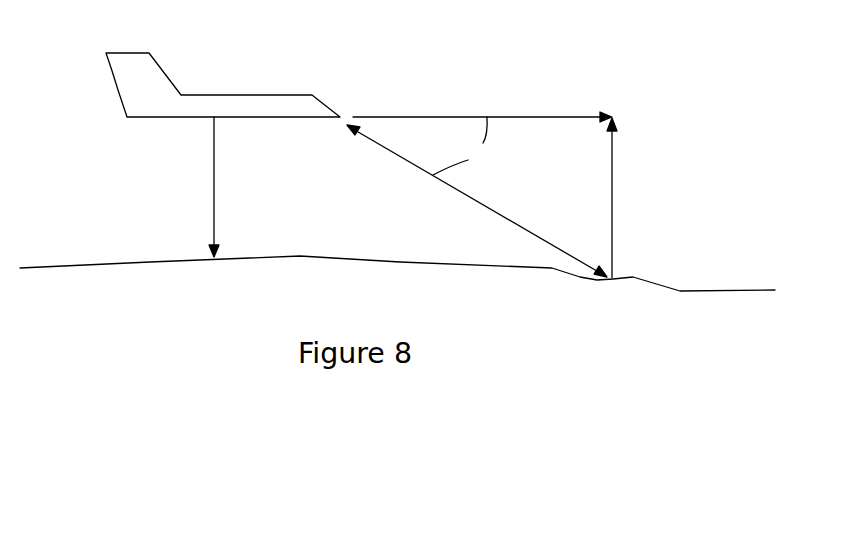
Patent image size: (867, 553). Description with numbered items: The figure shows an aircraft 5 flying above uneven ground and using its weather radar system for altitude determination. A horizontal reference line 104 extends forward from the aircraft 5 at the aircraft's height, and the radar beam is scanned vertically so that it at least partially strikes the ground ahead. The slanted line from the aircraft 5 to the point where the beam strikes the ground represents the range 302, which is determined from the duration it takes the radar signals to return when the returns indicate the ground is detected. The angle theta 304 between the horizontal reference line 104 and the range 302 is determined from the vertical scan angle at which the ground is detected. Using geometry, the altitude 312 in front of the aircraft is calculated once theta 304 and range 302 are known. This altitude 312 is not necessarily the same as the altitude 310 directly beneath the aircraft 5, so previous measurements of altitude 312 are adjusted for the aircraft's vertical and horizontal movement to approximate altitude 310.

The aircraft 5 is at (286, 72).
The horizontal reference line (flight path) 104 is at (446, 117).
The range 302 is at (387, 149).
The angle theta 304 is at (481, 153).
The altitude 310 is at (207, 155).
The altitude 312 is at (612, 166).